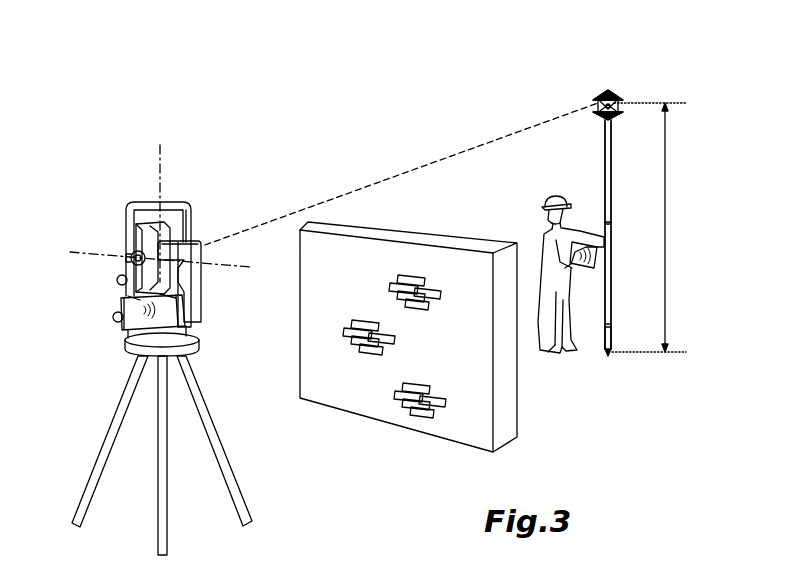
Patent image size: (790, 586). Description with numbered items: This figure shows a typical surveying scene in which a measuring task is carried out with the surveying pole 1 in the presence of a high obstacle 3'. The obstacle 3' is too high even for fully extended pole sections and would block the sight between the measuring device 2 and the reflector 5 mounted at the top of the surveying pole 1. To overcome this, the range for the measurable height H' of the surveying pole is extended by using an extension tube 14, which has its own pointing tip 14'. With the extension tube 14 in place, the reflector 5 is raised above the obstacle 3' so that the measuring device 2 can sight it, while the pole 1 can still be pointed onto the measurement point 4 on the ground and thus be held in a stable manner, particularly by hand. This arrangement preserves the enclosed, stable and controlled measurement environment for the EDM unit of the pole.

The surveying pole 1 is at (634, 88).
The measuring device 2 is at (194, 202).
The obstacle 3' is at (408, 324).
The measurement point 4 is at (608, 353).
The reflector 5 is at (596, 100).
The extension tube 14 is at (636, 234).
The pointing tip 14' is at (578, 375).
The measurable height H' is at (665, 227).